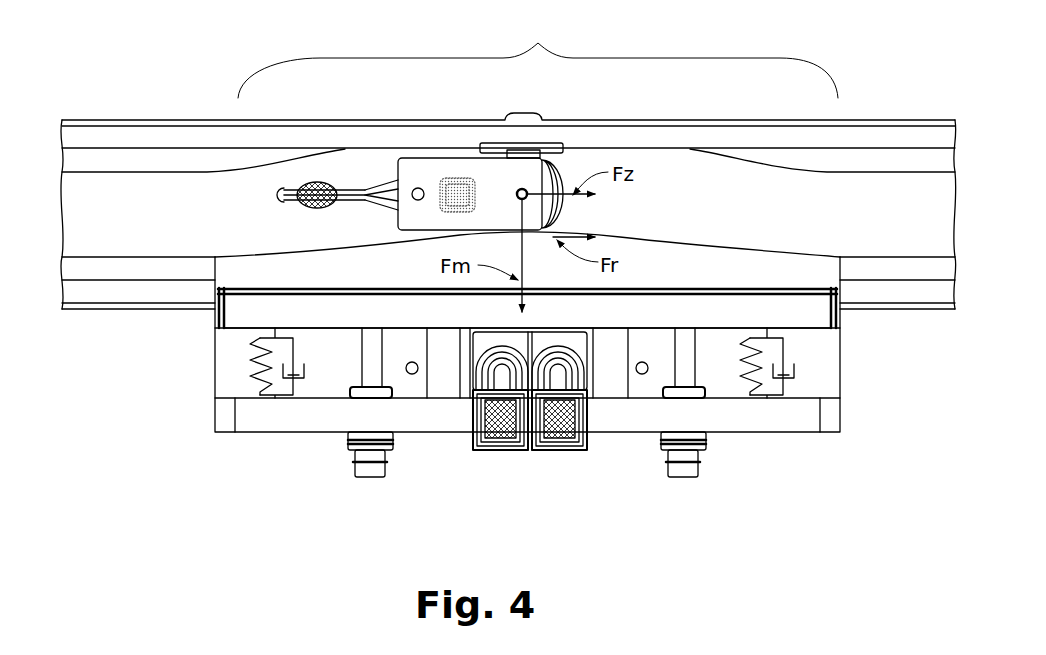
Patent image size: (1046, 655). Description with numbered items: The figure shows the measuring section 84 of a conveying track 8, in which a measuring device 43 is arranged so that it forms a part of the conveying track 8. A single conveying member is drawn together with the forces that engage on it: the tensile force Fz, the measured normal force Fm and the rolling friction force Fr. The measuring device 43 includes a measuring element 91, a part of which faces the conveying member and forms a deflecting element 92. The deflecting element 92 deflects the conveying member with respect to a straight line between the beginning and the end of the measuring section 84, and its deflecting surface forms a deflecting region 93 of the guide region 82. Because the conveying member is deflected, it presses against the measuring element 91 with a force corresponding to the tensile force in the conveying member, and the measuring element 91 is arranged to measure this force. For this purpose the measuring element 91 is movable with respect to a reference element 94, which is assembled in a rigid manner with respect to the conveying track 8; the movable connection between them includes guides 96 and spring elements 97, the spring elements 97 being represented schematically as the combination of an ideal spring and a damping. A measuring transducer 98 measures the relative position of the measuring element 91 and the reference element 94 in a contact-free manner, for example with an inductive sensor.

The conveying track 8 is at (842, 131).
The guide region 82 is at (885, 187).
The measuring section 84 is at (538, 52).
The measuring element 91 is at (805, 312).
The deflecting element 92 is at (707, 266).
The deflecting region 93 is at (655, 226).
The reference element 94 is at (791, 424).
The guides 96 is at (359, 469).
The spring elements 97 is at (262, 391).
The measuring transducer 98 is at (541, 459).
The measuring device 43 is at (209, 468).